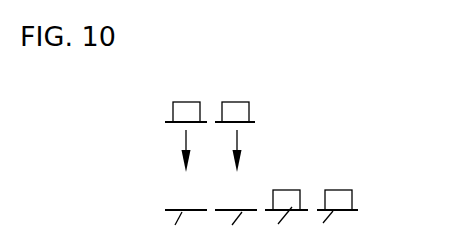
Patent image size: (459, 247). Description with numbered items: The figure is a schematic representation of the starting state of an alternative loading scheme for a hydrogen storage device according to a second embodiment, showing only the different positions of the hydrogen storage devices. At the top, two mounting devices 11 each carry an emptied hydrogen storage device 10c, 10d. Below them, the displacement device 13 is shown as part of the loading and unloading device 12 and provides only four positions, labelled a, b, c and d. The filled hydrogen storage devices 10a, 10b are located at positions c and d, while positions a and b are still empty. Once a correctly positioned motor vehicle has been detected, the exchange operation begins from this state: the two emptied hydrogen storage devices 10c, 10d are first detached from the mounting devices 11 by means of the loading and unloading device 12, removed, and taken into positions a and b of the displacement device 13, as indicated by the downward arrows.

The filled hydrogen storage device 10a is at (291, 188).
The filled hydrogen storage device 10b is at (342, 188).
The emptied hydrogen storage device 10c is at (188, 100).
The emptied hydrogen storage device 10d is at (235, 100).
The mounting device 11 is at (166, 121).
The loading and unloading device 12 is at (257, 198).
The displacement device 13 is at (146, 218).